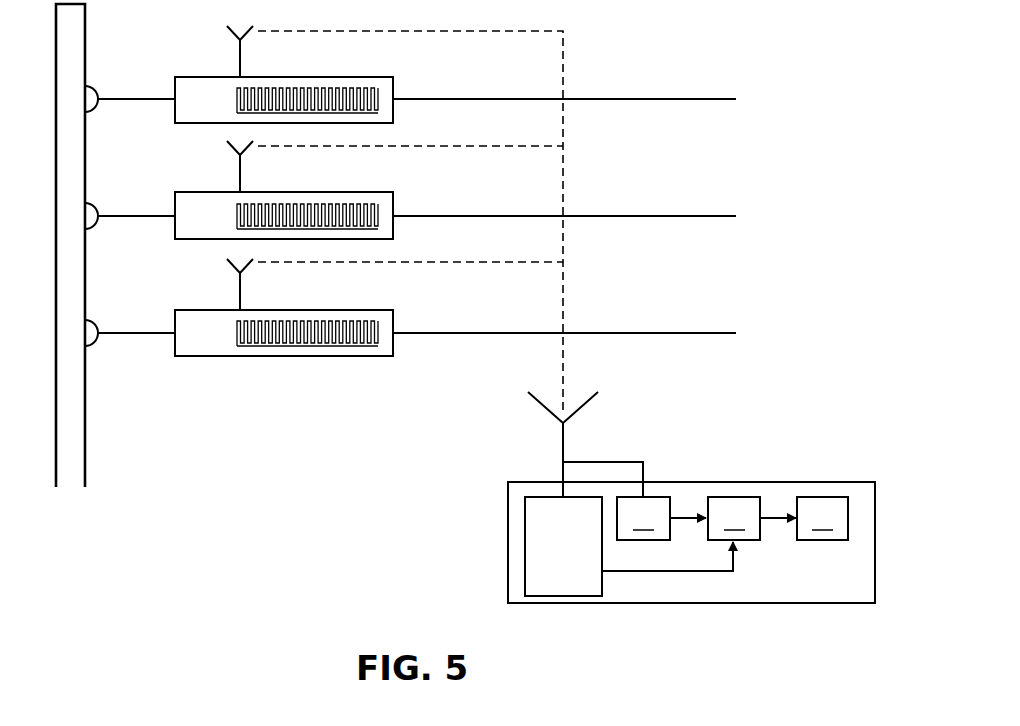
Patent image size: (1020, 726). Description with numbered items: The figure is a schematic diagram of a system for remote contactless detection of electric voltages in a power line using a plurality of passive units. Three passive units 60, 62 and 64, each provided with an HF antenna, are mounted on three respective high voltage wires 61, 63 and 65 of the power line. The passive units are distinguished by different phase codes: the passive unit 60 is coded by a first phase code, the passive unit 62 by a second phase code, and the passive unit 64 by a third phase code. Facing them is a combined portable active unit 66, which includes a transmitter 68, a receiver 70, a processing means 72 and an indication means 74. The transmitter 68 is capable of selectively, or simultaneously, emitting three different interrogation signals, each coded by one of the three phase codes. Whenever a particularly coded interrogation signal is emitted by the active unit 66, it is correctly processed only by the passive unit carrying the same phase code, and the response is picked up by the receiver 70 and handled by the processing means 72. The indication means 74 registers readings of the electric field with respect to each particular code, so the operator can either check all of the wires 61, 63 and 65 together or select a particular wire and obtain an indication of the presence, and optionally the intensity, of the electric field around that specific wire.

The passive unit 60 is at (382, 77).
The high voltage wire 61 is at (481, 99).
The passive unit 62 is at (382, 192).
The high voltage wire 63 is at (481, 216).
The passive unit 64 is at (382, 310).
The high voltage wire 65 is at (481, 333).
The combined portable active unit 66 is at (668, 497).
The transmitter 68 is at (525, 541).
The receiver 70 is at (643, 518).
The processing means 72 is at (734, 518).
The indication means 74 is at (822, 518).